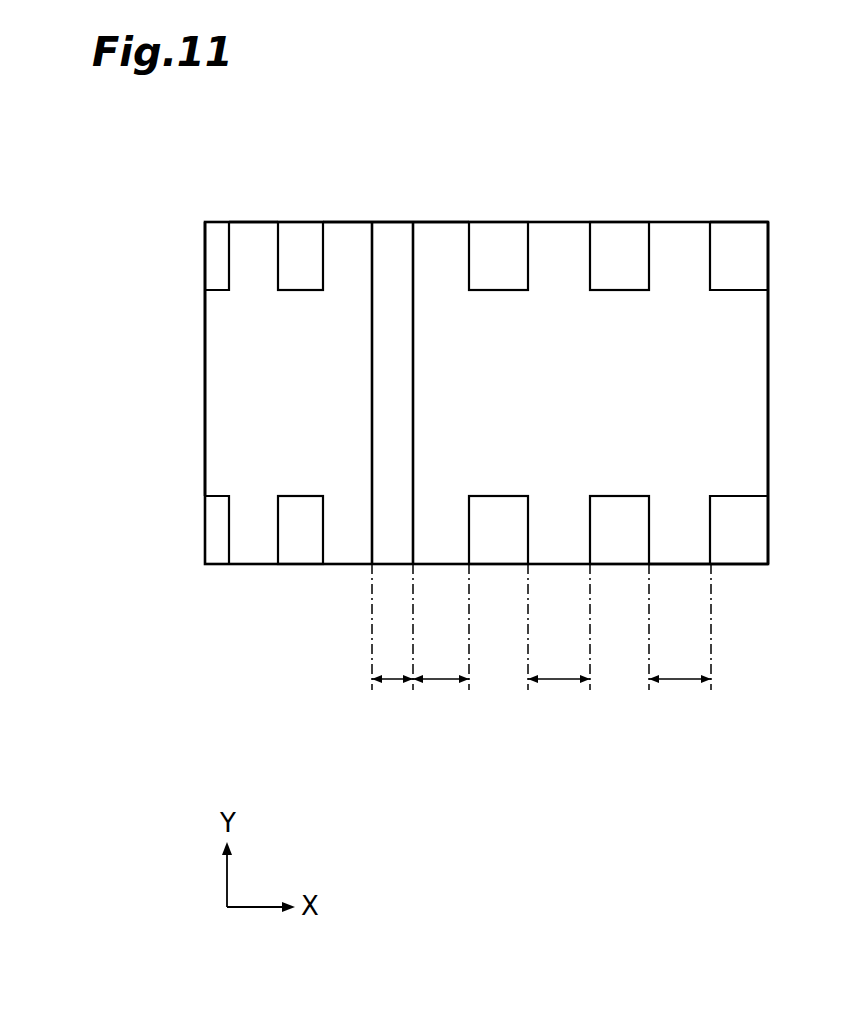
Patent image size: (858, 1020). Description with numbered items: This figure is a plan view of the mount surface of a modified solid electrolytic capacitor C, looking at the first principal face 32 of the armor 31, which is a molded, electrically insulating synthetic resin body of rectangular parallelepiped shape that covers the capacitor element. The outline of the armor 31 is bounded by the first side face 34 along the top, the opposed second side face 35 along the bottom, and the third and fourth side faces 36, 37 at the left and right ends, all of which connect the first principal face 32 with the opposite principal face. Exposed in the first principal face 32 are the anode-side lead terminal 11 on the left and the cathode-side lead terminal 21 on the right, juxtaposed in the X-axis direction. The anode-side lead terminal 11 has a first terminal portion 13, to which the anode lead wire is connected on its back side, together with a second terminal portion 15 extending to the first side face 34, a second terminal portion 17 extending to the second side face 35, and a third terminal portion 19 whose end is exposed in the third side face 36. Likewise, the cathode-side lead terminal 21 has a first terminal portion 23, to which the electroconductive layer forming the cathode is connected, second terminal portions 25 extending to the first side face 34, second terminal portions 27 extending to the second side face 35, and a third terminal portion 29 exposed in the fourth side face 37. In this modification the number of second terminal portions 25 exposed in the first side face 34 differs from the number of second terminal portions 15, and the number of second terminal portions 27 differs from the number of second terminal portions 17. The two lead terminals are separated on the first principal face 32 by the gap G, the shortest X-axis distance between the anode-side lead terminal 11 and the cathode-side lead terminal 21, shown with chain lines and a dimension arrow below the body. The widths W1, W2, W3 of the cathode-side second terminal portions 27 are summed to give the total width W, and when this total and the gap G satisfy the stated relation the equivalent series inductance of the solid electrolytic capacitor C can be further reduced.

The anode-side lead terminal 11 is at (218, 498).
The first terminal portion 13 is at (277, 383).
The second terminal portion 15 is at (342, 238).
The second terminal portion 17 is at (342, 548).
The third terminal portion 19 is at (212, 432).
The cathode-side lead terminal 21 is at (740, 289).
The first terminal portion 23 is at (592, 388).
The second terminal portion 25 is at (437, 237).
The second terminal portion 27 is at (438, 550).
The third terminal portion 29 is at (755, 452).
The armor 31 is at (237, 214).
The first principal face 32 is at (748, 543).
The first side face 34 is at (727, 223).
The second side face 35 is at (732, 567).
The third side face 36 is at (205, 255).
The fourth side face 37 is at (768, 523).
The solid electrolytic capacitor C is at (787, 201).
The gap G is at (392, 666).
The width of second terminal portion W1 is at (441, 667).
The width of second terminal portion W2 is at (559, 667).
The width of second terminal portion W3 is at (680, 667).